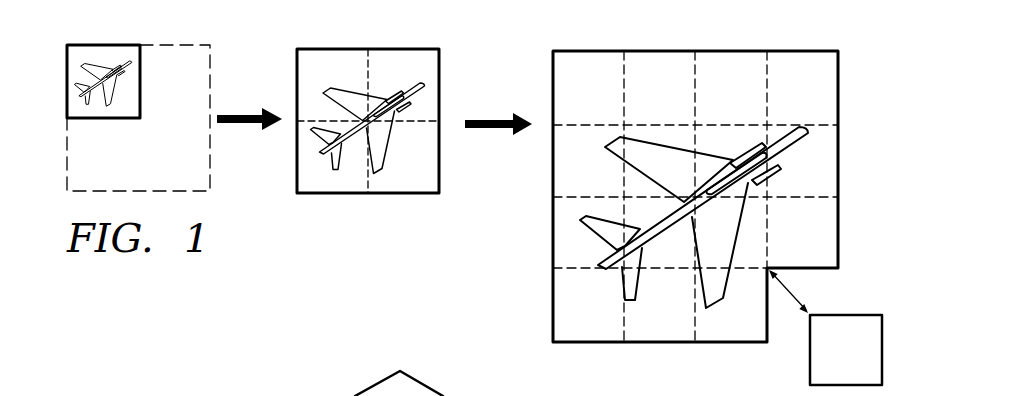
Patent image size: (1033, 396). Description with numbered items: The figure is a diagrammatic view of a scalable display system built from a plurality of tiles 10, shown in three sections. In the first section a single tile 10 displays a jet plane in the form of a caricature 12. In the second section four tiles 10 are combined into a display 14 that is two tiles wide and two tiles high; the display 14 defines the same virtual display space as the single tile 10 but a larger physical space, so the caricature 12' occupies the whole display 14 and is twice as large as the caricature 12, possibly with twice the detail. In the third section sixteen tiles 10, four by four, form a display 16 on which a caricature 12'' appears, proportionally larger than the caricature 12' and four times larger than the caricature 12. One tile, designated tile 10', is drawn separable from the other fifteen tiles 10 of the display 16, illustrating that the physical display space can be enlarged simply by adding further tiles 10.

The tile 10 is at (435, 199).
The caricature 12 is at (113, 110).
The display 14 is at (447, 58).
The caricature 12' is at (371, 136).
The display 16 is at (848, 70).
The caricature 12'' is at (694, 217).
The tile 10' is at (816, 333).